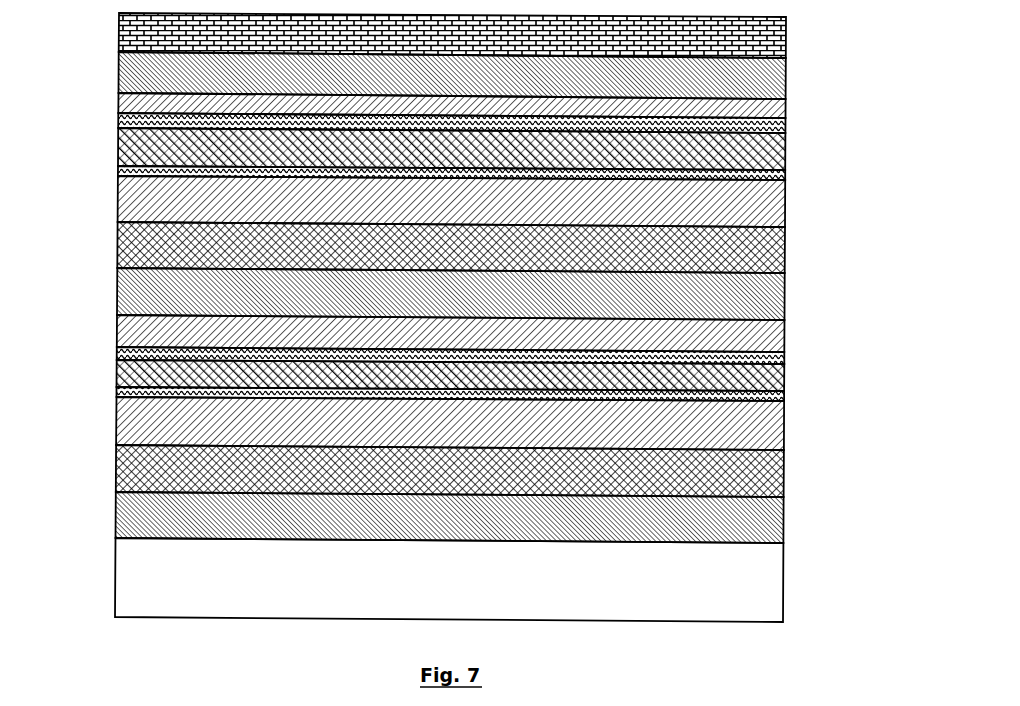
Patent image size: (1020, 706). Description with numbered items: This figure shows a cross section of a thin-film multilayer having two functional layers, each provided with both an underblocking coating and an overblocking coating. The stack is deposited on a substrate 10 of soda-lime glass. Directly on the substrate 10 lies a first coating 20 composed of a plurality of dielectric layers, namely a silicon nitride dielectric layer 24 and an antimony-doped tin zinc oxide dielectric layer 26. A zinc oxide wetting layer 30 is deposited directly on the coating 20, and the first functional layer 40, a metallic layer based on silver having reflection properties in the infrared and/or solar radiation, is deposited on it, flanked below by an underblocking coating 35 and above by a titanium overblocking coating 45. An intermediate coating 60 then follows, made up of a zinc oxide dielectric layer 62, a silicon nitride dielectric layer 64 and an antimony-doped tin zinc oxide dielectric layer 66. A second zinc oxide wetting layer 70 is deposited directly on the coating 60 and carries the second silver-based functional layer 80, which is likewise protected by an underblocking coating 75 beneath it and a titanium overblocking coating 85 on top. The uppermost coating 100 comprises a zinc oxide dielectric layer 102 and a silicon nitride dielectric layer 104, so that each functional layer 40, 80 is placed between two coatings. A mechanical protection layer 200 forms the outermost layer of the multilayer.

The substrate 10 is at (462, 575).
The coating 20 is at (436, 494).
The dielectric layer 24 is at (137, 512).
The dielectric layer 26 is at (128, 471).
The wetting layer 30 is at (137, 418).
The underblocking coating 35 is at (135, 388).
The functional layer 40 is at (768, 375).
The overblocking coating 45 is at (138, 357).
The coating 60 is at (442, 287).
The dielectric layer 62 is at (133, 322).
The dielectric layer 64 is at (140, 273).
The dielectric layer 66 is at (138, 230).
The wetting layer 70 is at (137, 185).
The underblocking coating 75 is at (133, 168).
The functional layer 80 is at (774, 141).
The overblocking coating 85 is at (152, 122).
The coating 100 is at (449, 82).
The dielectric layer 102 is at (137, 102).
The dielectric layer 104 is at (137, 75).
The mechanical protection layer 200 is at (140, 21).